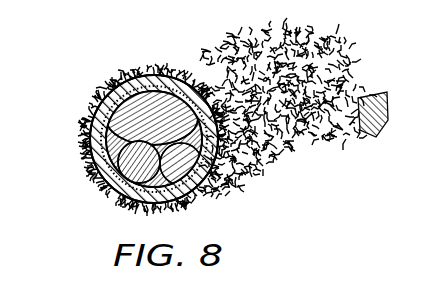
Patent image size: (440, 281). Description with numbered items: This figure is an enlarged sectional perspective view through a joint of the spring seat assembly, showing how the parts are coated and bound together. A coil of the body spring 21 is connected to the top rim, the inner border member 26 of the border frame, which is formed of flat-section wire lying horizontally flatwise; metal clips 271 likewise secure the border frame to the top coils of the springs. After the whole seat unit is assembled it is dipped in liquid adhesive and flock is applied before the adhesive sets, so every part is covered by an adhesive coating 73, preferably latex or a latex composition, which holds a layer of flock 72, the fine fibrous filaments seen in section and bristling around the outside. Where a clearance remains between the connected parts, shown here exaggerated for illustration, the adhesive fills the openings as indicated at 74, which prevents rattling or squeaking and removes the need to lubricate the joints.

The adhesive filling 74 is at (112, 81).
The inner border member 26 is at (84, 110).
The metal clips 271 is at (95, 140).
The body spring 21 is at (130, 158).
The adhesive coating 73 is at (95, 186).
The flock 72 is at (352, 142).